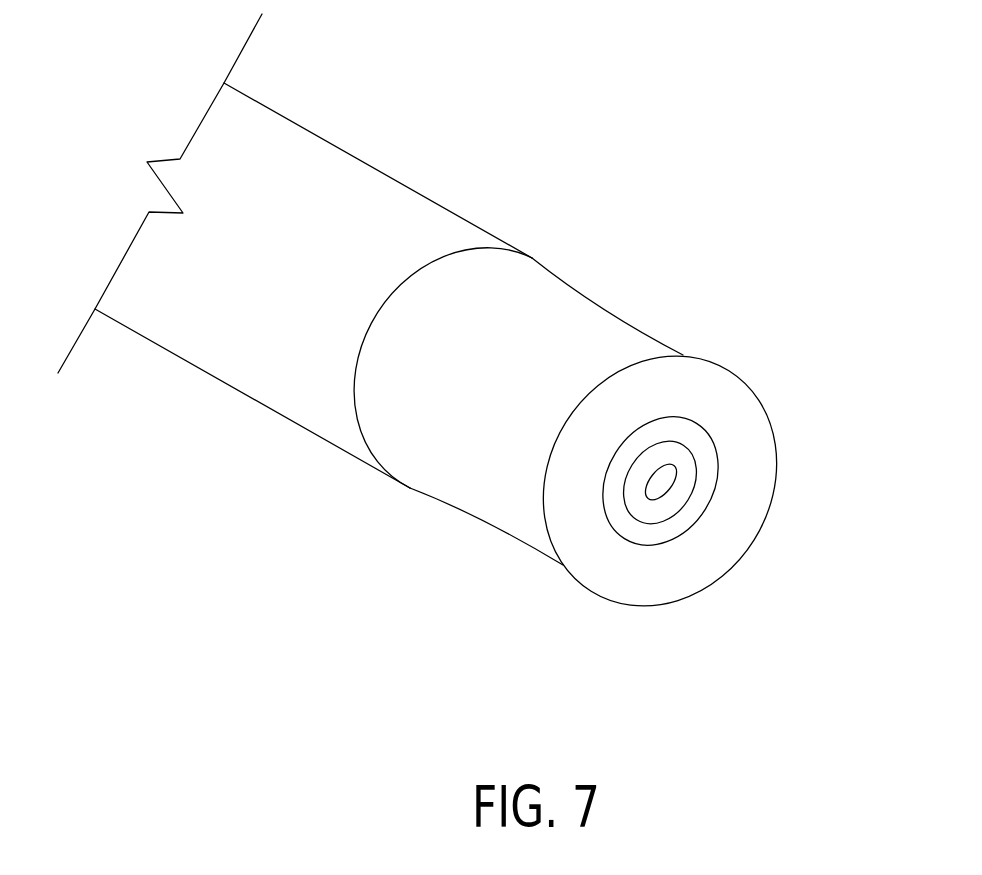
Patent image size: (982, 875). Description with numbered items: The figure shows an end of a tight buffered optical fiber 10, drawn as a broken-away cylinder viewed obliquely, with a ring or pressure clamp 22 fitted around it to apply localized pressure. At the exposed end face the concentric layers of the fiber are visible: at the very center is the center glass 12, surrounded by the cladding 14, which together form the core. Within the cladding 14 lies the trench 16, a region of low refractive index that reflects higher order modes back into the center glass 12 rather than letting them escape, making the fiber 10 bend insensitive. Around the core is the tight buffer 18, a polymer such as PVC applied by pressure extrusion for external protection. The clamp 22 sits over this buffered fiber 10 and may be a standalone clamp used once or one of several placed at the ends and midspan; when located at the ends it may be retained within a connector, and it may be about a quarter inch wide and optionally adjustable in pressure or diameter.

The optical fiber 10 is at (357, 187).
The center glass 12 is at (658, 485).
The cladding 14 is at (685, 485).
The trench 16 is at (700, 448).
The tight buffer 18 is at (708, 393).
The pressure clamp 22 is at (543, 338).